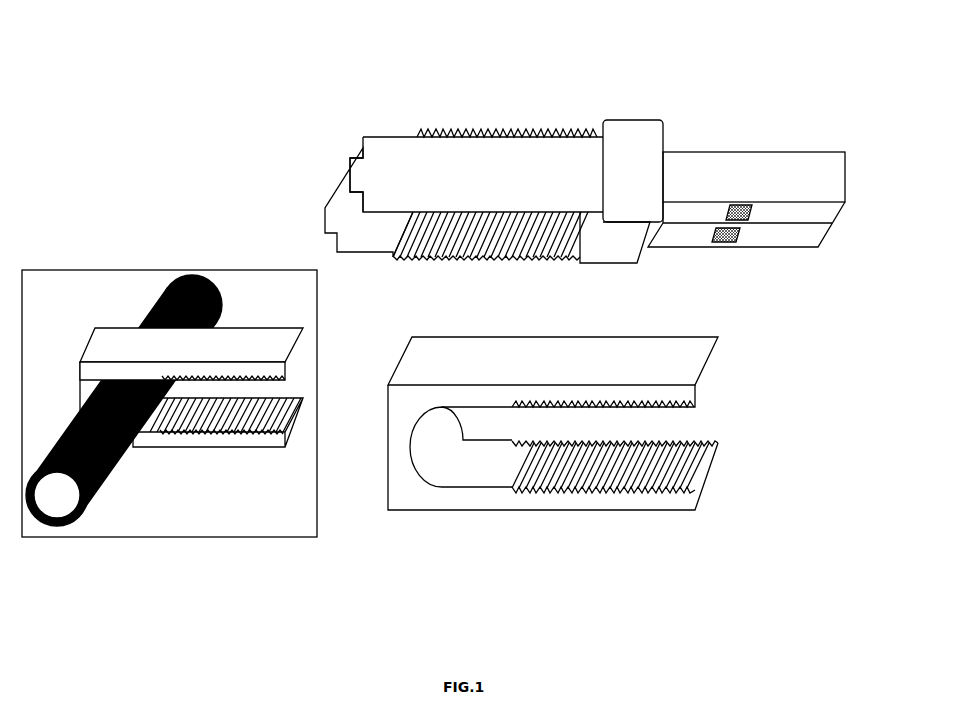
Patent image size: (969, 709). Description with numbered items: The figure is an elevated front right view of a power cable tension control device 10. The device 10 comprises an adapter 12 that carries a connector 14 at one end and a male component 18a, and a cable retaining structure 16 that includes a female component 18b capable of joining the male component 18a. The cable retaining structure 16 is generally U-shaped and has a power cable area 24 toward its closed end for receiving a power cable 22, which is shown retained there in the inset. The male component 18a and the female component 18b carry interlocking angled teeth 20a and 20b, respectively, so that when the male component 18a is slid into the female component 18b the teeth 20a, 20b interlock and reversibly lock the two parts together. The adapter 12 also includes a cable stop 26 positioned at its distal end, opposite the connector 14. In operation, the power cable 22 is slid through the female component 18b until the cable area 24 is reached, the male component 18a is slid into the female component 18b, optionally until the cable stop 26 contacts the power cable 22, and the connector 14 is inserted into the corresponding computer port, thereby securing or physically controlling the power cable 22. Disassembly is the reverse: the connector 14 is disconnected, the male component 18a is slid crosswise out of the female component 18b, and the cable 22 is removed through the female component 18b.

The power cable tension control device 10 is at (870, 59).
The adapter 12 is at (630, 108).
The connector 14 is at (793, 176).
The cable retaining structure 16 is at (372, 402).
The male component 18a is at (425, 180).
The female component 18b is at (522, 384).
The interlocking teeth 20a is at (569, 219).
The interlocking teeth 20b is at (682, 463).
The power cable 22 is at (215, 277).
The power cable area 24 is at (464, 430).
The cable stop 26 is at (332, 198).